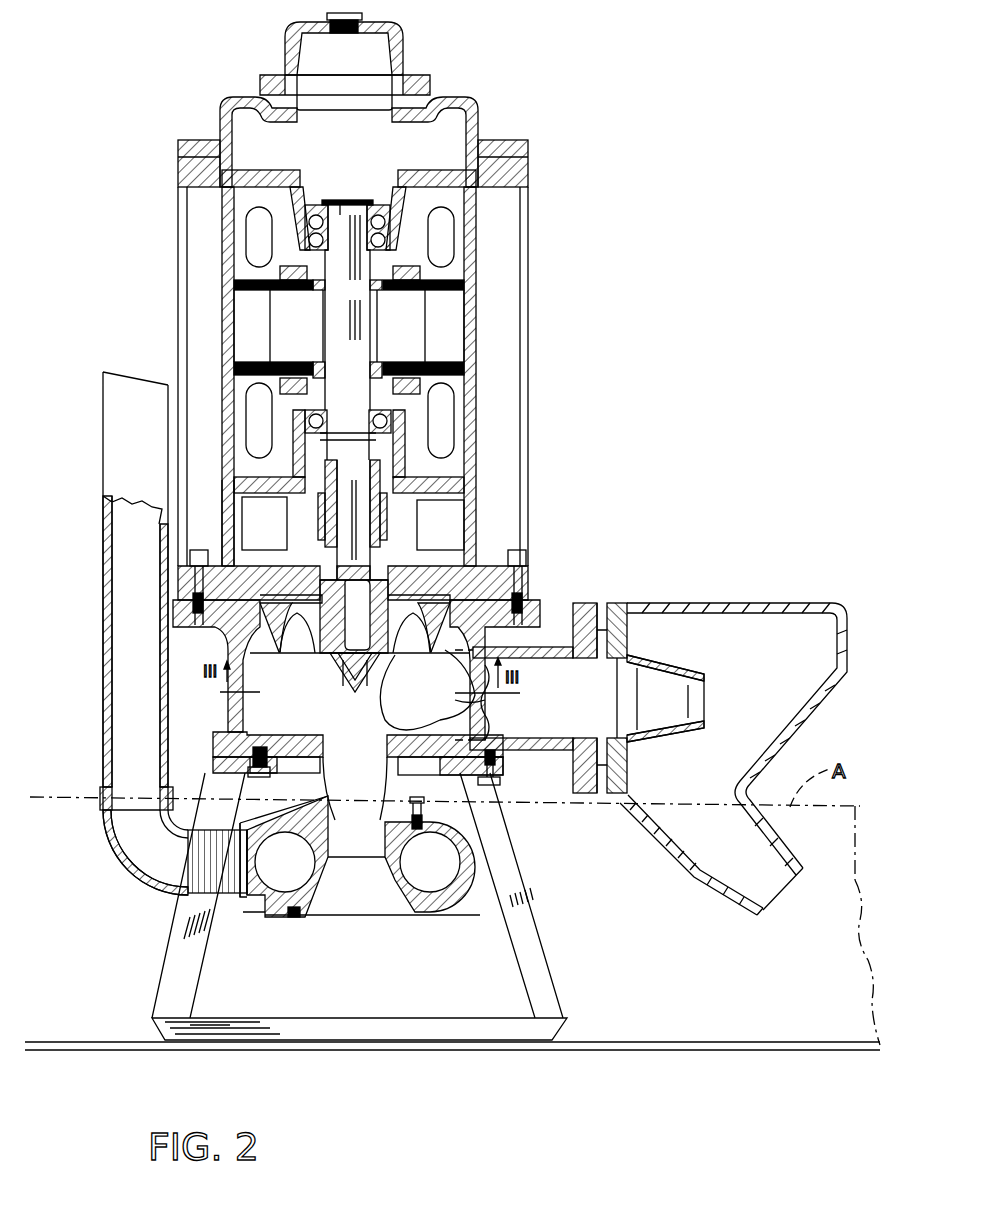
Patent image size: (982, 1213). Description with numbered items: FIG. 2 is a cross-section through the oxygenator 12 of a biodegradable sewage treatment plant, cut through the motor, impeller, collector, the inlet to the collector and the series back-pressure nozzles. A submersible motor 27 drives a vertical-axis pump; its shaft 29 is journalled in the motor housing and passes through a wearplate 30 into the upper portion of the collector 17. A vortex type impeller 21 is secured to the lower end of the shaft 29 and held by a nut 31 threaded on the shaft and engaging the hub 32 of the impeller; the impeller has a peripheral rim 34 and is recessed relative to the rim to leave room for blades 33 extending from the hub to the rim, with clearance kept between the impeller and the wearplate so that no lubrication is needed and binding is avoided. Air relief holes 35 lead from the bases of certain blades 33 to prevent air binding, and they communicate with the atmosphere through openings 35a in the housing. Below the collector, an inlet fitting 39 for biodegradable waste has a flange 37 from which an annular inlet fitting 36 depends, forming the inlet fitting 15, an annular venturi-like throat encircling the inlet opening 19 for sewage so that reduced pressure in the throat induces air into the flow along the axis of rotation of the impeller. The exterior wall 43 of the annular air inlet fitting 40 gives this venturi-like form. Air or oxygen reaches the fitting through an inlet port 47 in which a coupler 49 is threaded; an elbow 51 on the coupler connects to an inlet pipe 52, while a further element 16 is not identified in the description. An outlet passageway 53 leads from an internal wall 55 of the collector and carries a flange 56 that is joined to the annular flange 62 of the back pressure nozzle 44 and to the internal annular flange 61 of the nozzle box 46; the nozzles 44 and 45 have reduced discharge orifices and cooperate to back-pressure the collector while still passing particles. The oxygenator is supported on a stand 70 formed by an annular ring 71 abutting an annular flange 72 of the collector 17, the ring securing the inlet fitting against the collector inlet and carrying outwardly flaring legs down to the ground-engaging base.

The oxygenator 12 is at (172, 183).
The motor 27 is at (240, 279).
The shaft 29 is at (330, 324).
The wearplate 30 is at (339, 520).
The openings 35a is at (224, 512).
The air relief holes 35 is at (305, 598).
The suction pipe 16 is at (100, 428).
The inlet pipe 52 is at (103, 539).
The elbow 51 is at (118, 858).
The coupler 49 is at (212, 893).
The collector 17 is at (226, 722).
The vortex type impeller 21 is at (315, 638).
The blades 33 is at (294, 669).
The peripheral rim 34 is at (428, 666).
The nut 31 is at (350, 690).
The hub 32 is at (427, 690).
The inlet fitting 39 is at (343, 752).
The outlet passageway 53 is at (382, 750).
The internal wall 55 is at (470, 708).
The flange 37 is at (425, 812).
The exterior wall 43 is at (308, 862).
The annular inlet fitting 36 is at (452, 884).
The annular air inlet fitting 40 is at (410, 915).
The inlet opening 19 is at (370, 915).
The inlet fitting 15 is at (257, 910).
The inlet port 47 is at (290, 915).
The stand 70 is at (537, 897).
The internal annular flange 61 is at (620, 642).
The flange 56 is at (572, 798).
The annular flange 62 is at (614, 802).
The back pressure nozzle 44 is at (672, 742).
The nozzle box 46 is at (800, 735).
The nozzle 45 is at (738, 882).
The annular flange 72 is at (500, 754).
The annular ring 71 is at (500, 781).